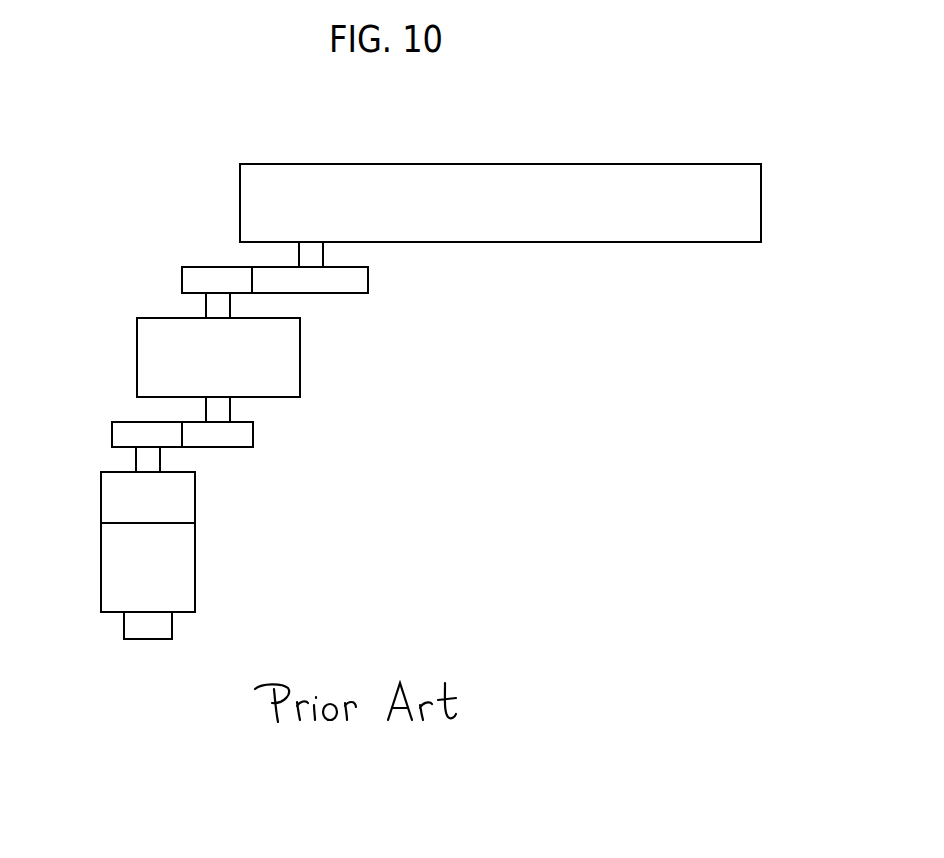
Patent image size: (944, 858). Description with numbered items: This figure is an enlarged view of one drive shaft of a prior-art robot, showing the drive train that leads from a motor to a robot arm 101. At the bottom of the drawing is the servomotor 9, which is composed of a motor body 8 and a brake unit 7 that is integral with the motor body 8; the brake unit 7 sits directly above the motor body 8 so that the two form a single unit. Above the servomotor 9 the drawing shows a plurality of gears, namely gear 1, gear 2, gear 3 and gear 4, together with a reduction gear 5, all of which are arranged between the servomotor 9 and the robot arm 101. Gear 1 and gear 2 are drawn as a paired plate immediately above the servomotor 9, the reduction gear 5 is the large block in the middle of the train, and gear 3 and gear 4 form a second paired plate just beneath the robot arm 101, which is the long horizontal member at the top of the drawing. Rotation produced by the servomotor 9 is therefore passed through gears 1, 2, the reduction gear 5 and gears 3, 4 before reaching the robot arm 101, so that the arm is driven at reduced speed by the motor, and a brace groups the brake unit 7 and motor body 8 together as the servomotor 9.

The robot arm 101 is at (668, 183).
The gear 3 is at (197, 277).
The gear 4 is at (360, 283).
The reduction gear 5 is at (279, 367).
The gear 1 is at (128, 427).
The gear 2 is at (238, 437).
The brake unit 7 is at (177, 502).
The motor body 8 is at (182, 572).
The servomotor 9 is at (141, 556).